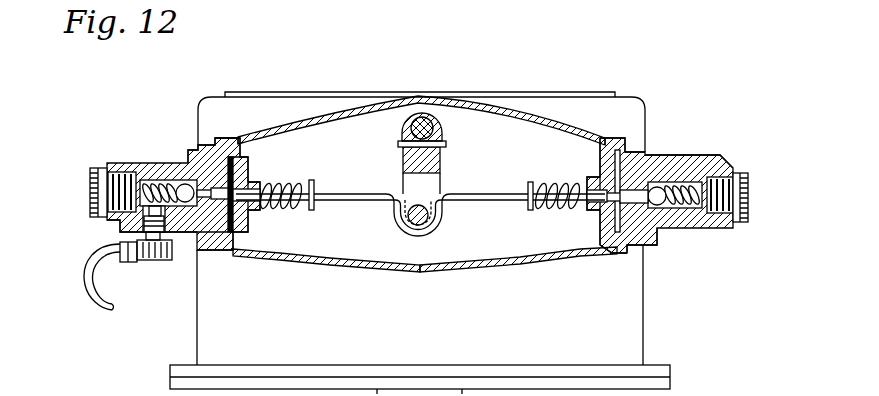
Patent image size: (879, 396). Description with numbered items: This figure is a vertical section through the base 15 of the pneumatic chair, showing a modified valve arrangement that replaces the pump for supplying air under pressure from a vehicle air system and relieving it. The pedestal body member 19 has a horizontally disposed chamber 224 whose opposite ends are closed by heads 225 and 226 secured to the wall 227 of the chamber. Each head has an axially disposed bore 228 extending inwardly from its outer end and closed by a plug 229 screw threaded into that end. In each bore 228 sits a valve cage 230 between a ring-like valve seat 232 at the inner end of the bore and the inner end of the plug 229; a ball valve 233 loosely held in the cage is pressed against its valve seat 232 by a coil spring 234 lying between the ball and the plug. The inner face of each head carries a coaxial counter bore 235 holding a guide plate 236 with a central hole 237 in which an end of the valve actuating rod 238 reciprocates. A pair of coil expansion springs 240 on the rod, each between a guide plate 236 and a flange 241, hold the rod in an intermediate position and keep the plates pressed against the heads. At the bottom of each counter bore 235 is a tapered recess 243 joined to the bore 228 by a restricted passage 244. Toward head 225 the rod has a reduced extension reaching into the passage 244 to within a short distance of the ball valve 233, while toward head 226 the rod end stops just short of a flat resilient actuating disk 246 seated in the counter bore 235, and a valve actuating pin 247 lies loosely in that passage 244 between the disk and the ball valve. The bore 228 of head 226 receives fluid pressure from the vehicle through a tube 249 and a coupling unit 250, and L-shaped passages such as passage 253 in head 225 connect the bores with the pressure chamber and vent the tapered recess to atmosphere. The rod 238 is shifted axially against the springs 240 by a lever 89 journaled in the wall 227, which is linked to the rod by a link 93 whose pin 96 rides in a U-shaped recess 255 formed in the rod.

The base 15 is at (634, 343).
The pedestal body member 19 is at (517, 103).
The lever 89 is at (424, 115).
The link 93 is at (444, 148).
The pin 96 is at (411, 232).
The chamber 224 is at (346, 253).
The head 225 is at (729, 160).
The head 226 is at (122, 163).
The wall 227 is at (513, 259).
The bore 228 is at (122, 170).
The plug 229 is at (90, 177).
The valve cage 230 is at (172, 182).
The valve seat 232 is at (189, 184).
The ball valve 233 is at (192, 203).
The coil spring 234 is at (122, 222).
The counter bore 235 is at (242, 152).
The guide plate 236 is at (238, 150).
The central hole 237 is at (254, 218).
The valve actuating rod 238 is at (481, 195).
The coil expansion springs 240 is at (290, 212).
The flange 241 is at (312, 210).
The tapered recess 243 is at (214, 148).
The restricted passage 244 is at (207, 168).
The actuating disk 246 is at (229, 150).
The valve actuating pin 247 is at (215, 250).
The tube 249 is at (93, 298).
The coupling unit 250 is at (150, 258).
The fluid passage 253 is at (650, 232).
The U-shaped recess 255 is at (424, 206).